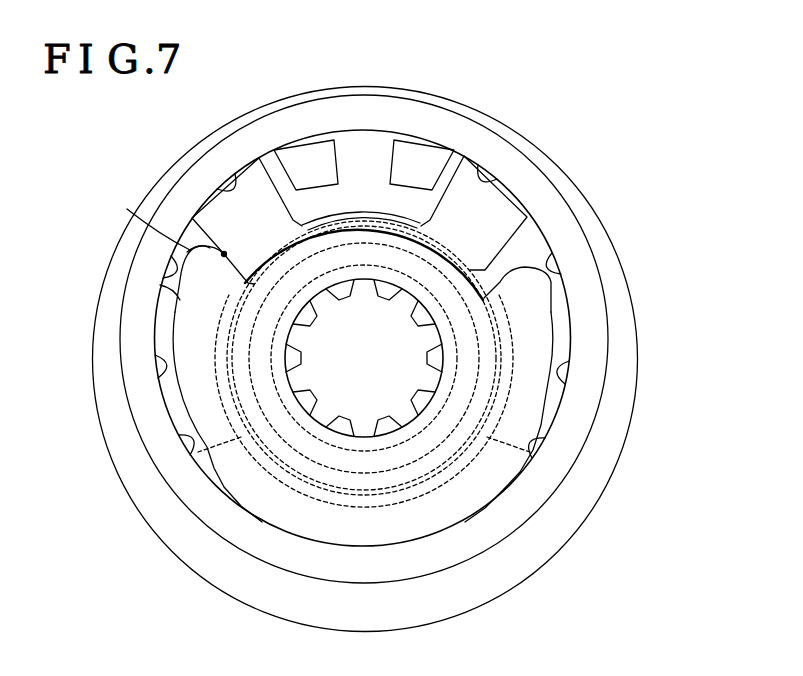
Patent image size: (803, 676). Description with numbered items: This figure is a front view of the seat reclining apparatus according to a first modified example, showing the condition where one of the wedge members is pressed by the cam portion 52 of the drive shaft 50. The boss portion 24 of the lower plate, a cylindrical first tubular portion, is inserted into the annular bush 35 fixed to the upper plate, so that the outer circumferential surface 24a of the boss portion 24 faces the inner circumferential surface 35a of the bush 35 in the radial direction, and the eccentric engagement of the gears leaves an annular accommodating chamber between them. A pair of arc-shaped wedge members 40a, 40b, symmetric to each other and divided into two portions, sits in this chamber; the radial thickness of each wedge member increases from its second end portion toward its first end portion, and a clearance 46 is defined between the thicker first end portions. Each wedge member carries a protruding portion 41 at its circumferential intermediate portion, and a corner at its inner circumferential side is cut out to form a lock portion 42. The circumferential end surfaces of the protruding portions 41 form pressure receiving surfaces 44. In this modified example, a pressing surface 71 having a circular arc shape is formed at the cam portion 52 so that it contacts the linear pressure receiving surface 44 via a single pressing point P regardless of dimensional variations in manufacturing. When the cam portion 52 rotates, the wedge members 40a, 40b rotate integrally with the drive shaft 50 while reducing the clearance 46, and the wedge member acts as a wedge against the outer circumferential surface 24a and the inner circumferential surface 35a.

The boss portion 24 is at (312, 484).
The outer circumferential surface 24a is at (418, 484).
The bush 35 is at (369, 579).
The inner circumferential surface 35a is at (466, 516).
The wedge member 40a is at (162, 316).
The wedge member 40b is at (562, 315).
The protruding portion 41 is at (212, 204).
The lock portion 42 is at (300, 201).
The pressure receiving surface 44 is at (211, 252).
The clearance 46 is at (367, 153).
The drive shaft 50 is at (381, 371).
The cam portion 52 is at (160, 285).
The pressing surface 71 is at (127, 209).
The pressing point P is at (226, 252).